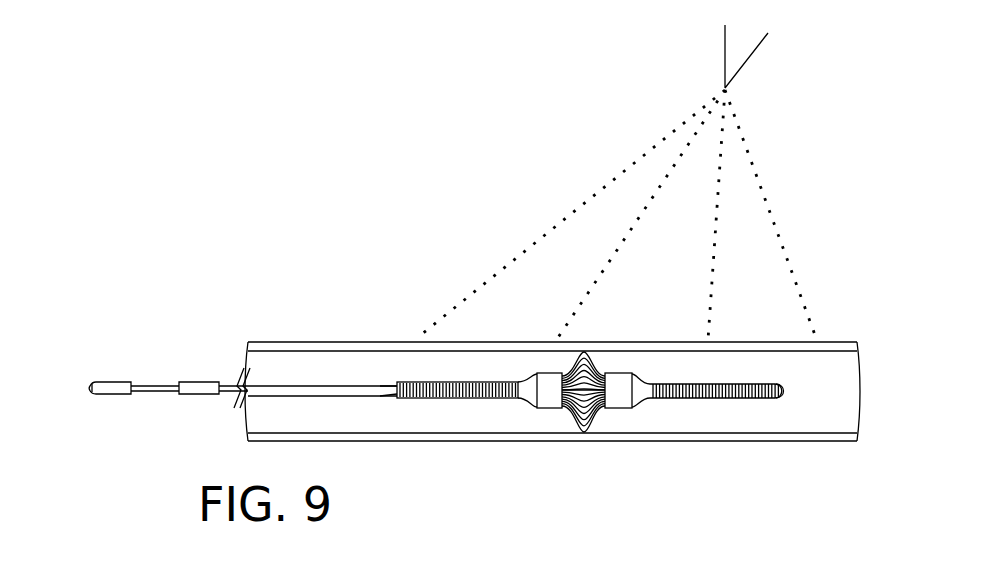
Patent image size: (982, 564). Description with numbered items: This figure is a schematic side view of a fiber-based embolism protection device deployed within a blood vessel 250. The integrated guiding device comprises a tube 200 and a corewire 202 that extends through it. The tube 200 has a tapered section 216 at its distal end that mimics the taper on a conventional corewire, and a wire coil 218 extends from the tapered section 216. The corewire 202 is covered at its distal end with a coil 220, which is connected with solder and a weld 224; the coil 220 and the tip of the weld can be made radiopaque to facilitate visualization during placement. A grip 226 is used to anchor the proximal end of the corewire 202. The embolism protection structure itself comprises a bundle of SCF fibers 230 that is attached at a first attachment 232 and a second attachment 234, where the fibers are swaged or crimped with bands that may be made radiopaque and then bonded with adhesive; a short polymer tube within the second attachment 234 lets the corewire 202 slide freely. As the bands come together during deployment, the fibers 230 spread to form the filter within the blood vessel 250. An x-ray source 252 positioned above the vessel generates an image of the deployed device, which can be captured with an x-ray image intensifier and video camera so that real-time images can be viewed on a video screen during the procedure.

The tube 200 is at (275, 384).
The corewire 202 is at (153, 384).
The tapered section 216 is at (397, 398).
The wire coil 218 is at (453, 382).
The coil 220 is at (692, 398).
The weld 224 is at (783, 390).
The grip 226 is at (108, 396).
The SCF fibers 230 is at (585, 432).
The first attachment 232 is at (620, 380).
The second attachment 234 is at (549, 380).
The blood vessel 250 is at (796, 437).
The x-ray source 252 is at (748, 55).